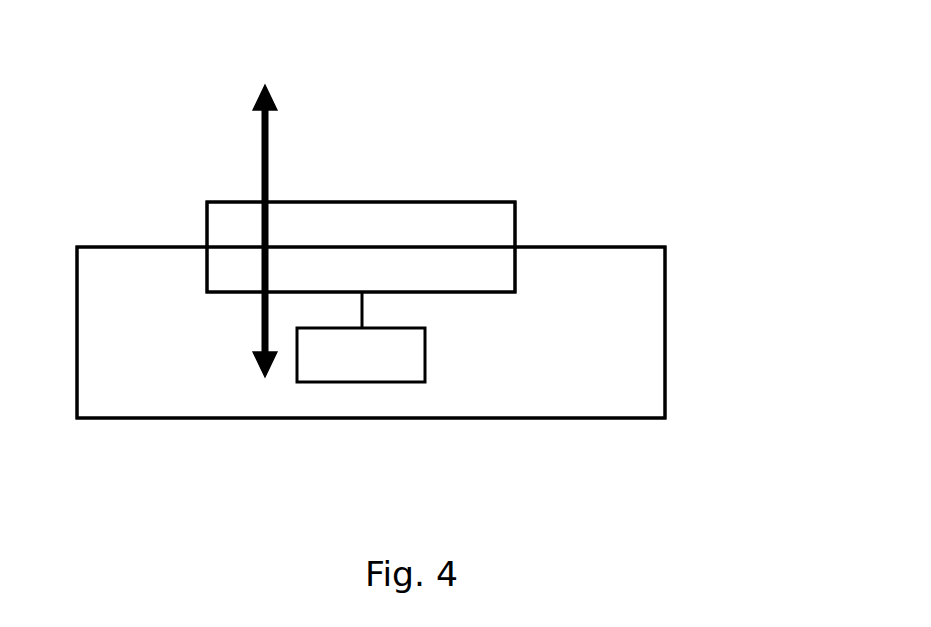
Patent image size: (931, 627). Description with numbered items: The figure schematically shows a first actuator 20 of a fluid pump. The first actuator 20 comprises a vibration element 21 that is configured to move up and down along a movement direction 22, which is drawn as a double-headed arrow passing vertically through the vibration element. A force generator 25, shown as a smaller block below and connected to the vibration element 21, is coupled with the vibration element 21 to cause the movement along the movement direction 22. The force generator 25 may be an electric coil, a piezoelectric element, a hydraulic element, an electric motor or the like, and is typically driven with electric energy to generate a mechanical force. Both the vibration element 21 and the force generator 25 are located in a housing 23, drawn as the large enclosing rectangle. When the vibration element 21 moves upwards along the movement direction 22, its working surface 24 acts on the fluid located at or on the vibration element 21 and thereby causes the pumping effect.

The first actuator 20 is at (718, 272).
The vibration element 21 is at (470, 275).
The movement direction 22 is at (262, 134).
The housing 23 is at (666, 363).
The working surface 24 is at (470, 200).
The force generator 25 is at (347, 362).